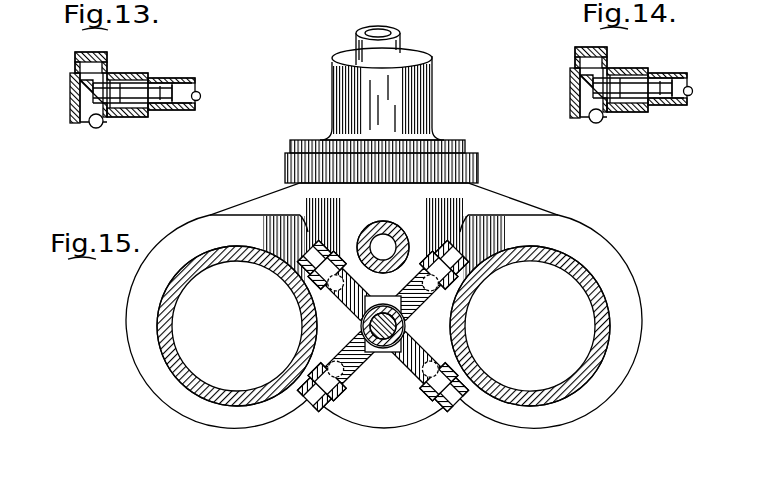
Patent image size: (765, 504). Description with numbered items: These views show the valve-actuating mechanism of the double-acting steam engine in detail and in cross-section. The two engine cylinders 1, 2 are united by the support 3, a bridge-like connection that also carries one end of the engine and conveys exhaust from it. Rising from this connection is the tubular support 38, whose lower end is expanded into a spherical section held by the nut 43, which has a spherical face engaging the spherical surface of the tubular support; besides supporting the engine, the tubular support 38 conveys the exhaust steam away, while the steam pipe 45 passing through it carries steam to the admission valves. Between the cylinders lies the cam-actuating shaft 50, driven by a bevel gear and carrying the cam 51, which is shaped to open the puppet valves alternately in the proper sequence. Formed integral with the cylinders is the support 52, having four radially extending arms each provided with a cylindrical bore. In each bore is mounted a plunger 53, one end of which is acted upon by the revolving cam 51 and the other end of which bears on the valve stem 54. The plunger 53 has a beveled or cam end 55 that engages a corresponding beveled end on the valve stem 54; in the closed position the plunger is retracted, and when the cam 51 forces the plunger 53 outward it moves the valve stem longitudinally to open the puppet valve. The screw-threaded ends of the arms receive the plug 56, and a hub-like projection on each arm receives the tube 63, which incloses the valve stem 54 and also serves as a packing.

In FIG. 15, the cylinder 1 is at (536, 405).
In FIG. 15, the cylinder 2 is at (238, 407).
In FIG. 15, the support 3 is at (268, 197).
In FIG. 15, the tubular support 38 is at (418, 103).
In FIG. 15, the nut 43 is at (466, 148).
In FIG. 15, the steam pipe 45 is at (388, 50).
In FIG. 15, the cam-actuating shaft 50 is at (383, 332).
In FIG. 15, the cam 51 is at (400, 319).
In FIG. 15, the support 52 is at (406, 335).
In FIG. 13, the plunger 53 is at (92, 124).
In FIG. 14, the plunger 53 is at (590, 120).
In FIG. 15, the plunger 53 is at (357, 358).
In FIG. 13, the valve stem 54 is at (173, 90).
In FIG. 14, the valve stem 54 is at (690, 89).
In FIG. 13, the beveled or cam end 55 is at (78, 88).
In FIG. 13, the plug 56 is at (77, 64).
In FIG. 15, the plug 56 is at (320, 250).
In FIG. 13, the tube 63 is at (160, 80).
In FIG. 14, the tube 63 is at (660, 74).